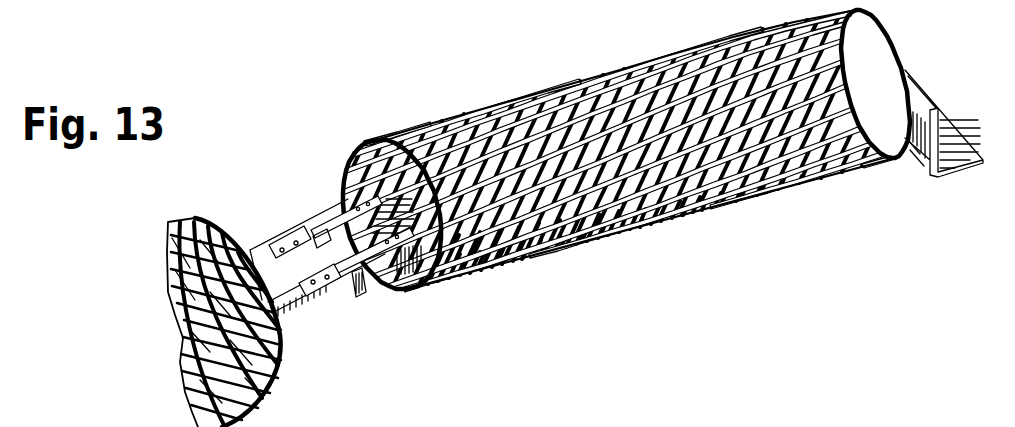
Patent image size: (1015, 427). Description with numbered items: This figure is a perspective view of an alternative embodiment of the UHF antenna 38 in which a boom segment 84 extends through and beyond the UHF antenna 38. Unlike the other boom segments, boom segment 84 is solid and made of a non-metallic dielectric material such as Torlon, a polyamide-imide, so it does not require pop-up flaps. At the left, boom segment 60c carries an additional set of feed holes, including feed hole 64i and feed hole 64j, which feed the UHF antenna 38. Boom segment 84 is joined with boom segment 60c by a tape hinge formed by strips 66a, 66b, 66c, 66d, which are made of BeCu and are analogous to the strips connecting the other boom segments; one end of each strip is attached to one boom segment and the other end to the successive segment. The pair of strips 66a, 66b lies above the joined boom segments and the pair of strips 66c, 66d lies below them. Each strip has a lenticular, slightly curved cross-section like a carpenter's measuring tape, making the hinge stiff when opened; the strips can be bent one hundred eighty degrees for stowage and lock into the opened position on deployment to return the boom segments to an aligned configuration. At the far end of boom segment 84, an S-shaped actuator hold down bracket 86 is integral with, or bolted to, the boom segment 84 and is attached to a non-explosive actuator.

The UHF antenna 38 is at (719, 210).
The boom segment 84 is at (867, 167).
The actuator hold down bracket 86 is at (974, 152).
The boom segment 60c is at (301, 328).
The feed hole 64i is at (327, 254).
The feed hole 64j is at (343, 263).
The strip 66a is at (326, 226).
The strip 66b is at (372, 258).
The strip 66c is at (337, 224).
The strip 66d is at (376, 280).